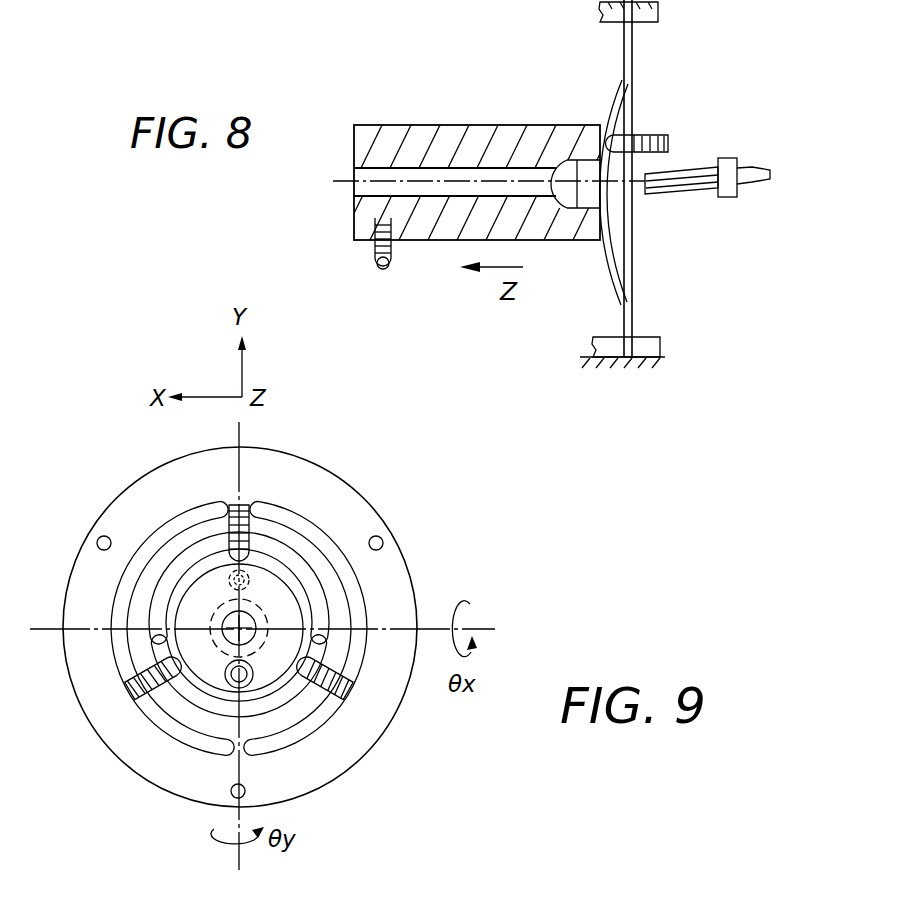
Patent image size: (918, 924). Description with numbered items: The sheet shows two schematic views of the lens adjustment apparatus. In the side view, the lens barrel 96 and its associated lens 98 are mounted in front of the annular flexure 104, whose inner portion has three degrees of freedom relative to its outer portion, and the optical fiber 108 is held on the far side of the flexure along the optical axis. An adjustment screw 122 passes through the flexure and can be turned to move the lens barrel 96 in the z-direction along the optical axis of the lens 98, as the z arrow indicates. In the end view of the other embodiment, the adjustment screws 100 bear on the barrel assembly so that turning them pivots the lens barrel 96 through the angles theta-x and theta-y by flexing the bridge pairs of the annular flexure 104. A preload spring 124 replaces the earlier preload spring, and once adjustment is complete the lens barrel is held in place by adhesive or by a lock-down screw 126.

In FIG. 8, the lens barrel 96 is at (436, 131).
In FIG. 8, the lens 98 is at (556, 158).
In FIG. 8, the adjustment screw 100 is at (395, 268).
In FIG. 9, the adjustment screw 100 is at (124, 706).
In FIG. 8, the annular flexure 104 is at (623, 39).
In FIG. 8, the optical fiber 108 is at (753, 165).
In FIG. 8, the adjustment screw 122 is at (668, 134).
In FIG. 9, the preload spring 124 is at (228, 682).
In FIG. 9, the lock-down screw 126 is at (258, 492).